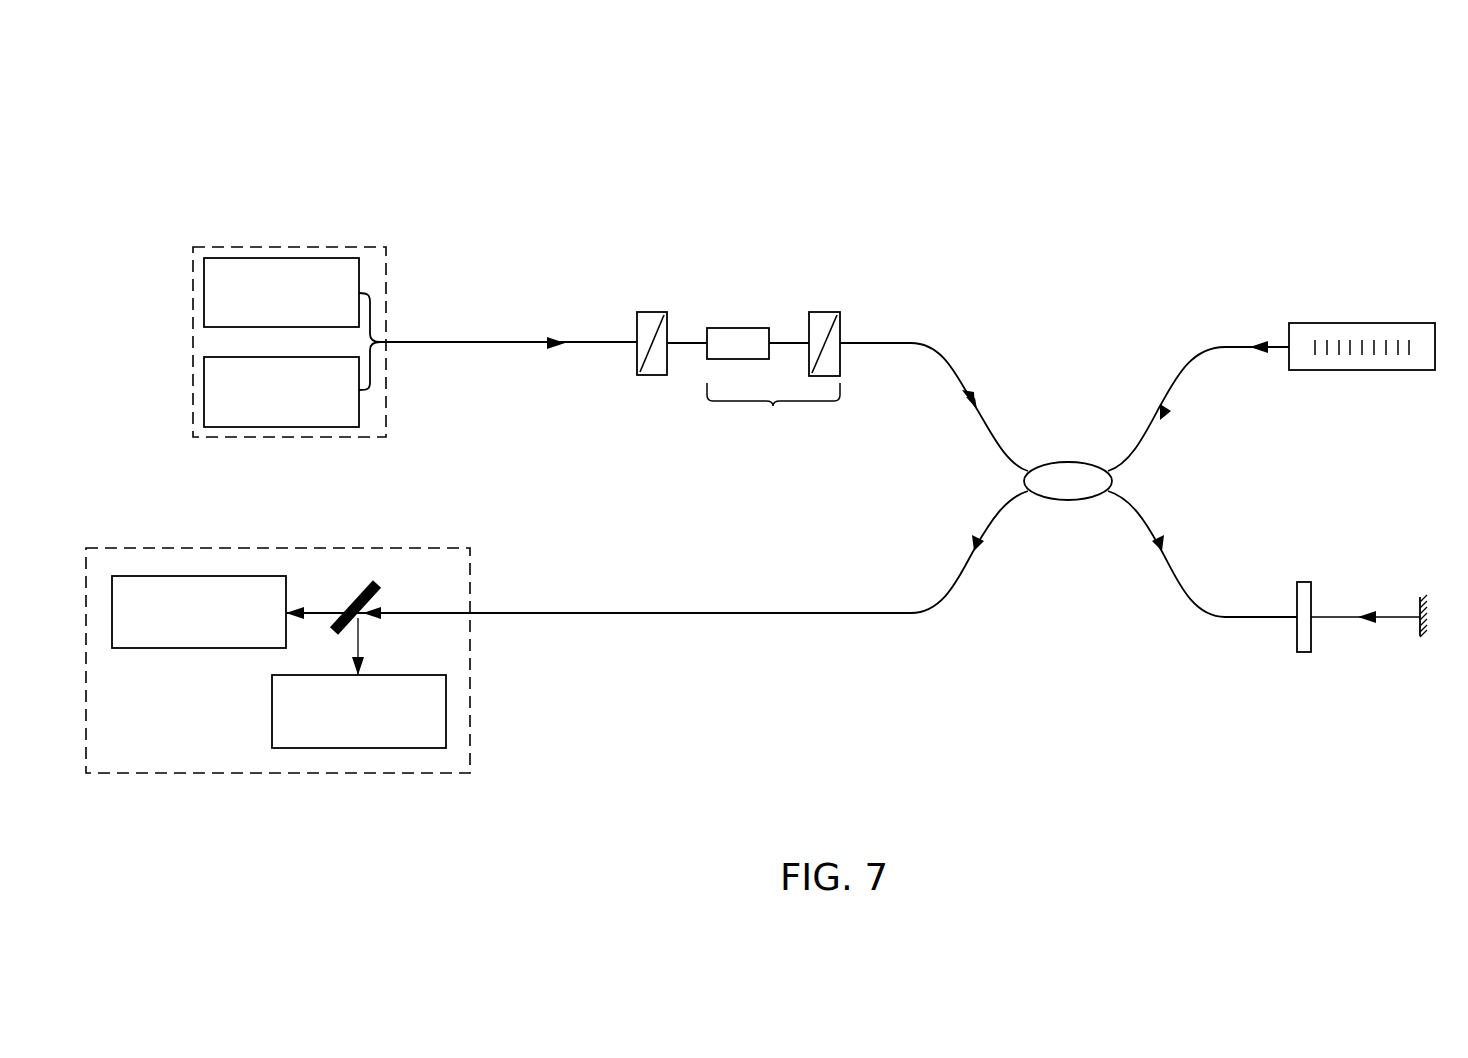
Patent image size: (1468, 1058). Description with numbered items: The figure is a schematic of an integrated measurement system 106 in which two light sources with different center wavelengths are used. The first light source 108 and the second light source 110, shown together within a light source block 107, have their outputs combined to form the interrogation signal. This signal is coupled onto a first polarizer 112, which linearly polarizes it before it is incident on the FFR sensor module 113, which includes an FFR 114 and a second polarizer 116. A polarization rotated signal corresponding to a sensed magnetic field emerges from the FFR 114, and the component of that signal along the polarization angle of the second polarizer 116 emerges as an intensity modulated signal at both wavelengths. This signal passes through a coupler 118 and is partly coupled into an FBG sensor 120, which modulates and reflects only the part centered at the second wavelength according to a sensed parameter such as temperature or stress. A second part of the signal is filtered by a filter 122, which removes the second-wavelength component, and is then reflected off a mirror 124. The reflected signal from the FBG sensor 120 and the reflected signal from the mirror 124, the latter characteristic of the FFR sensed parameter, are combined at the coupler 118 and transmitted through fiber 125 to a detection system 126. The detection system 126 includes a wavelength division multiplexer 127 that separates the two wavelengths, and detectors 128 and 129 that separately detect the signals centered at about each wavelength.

The measurement system 106 is at (1340, 95).
The light source module 107 is at (306, 247).
The light source-1 108 is at (204, 291).
The light source-2 110 is at (204, 391).
The first polarizer 112 is at (652, 312).
The FFR sensor module 113 is at (773, 410).
The FFR 114 is at (738, 328).
The second polarizer 116 is at (824, 312).
The coupler 118 is at (1068, 462).
The FBG sensor 120 is at (1362, 323).
The filter 122 is at (1304, 582).
The mirror 124 is at (1420, 597).
The fiber 125 is at (722, 613).
The detection system 126 is at (336, 548).
The wavelength division multiplexer 127 is at (381, 590).
The detector 128 is at (446, 712).
The detector 129 is at (197, 576).